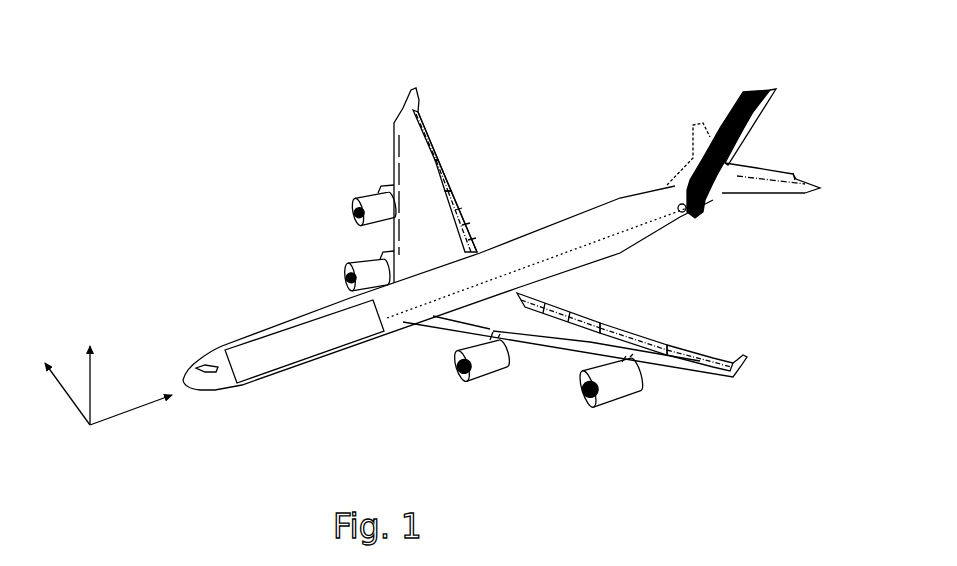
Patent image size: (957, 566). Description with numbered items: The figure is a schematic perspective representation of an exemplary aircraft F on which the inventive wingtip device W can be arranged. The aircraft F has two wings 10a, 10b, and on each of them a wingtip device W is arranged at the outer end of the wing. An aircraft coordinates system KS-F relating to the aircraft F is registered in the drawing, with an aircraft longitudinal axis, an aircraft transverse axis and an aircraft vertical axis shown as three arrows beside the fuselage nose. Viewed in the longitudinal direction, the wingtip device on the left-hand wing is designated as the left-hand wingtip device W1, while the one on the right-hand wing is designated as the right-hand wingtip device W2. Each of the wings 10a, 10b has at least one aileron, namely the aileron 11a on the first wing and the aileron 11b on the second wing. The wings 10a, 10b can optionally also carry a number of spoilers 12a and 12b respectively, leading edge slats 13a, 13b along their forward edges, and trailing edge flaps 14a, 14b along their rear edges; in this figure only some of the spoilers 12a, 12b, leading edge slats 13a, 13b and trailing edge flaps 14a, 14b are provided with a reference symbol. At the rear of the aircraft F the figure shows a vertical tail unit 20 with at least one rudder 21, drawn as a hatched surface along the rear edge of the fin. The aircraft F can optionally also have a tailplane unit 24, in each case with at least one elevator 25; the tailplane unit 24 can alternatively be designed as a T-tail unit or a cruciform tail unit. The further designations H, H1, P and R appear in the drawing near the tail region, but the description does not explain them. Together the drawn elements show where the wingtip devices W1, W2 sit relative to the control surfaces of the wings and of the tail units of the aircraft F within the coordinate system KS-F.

The aircraft F is at (283, 259).
The wingtip device W is at (574, 237).
The left-hand wingtip device W1 is at (423, 173).
The right-hand wingtip device W2 is at (644, 361).
The wing 10a is at (423, 190).
The wing 10b is at (607, 361).
The aileron 11a is at (427, 128).
The aileron 11b is at (687, 338).
The spoilers 12a is at (462, 210).
The spoilers 12b is at (537, 293).
The leading edge slats 13a is at (390, 150).
The leading edge slats 13b is at (580, 350).
The trailing edge flaps 14a is at (443, 177).
The trailing edge flaps 14b is at (627, 333).
The vertical tail unit 20 is at (743, 95).
The rudder 21 is at (738, 145).
The tailplane unit 24 is at (763, 192).
The elevator 25 is at (793, 172).
The horizontal tail plane H is at (811, 184).
The horizontal stabilizer H1 is at (757, 167).
The pivot point P is at (713, 207).
The rear fuselage section R is at (690, 255).
The aircraft coordinates system KS-F is at (111, 443).